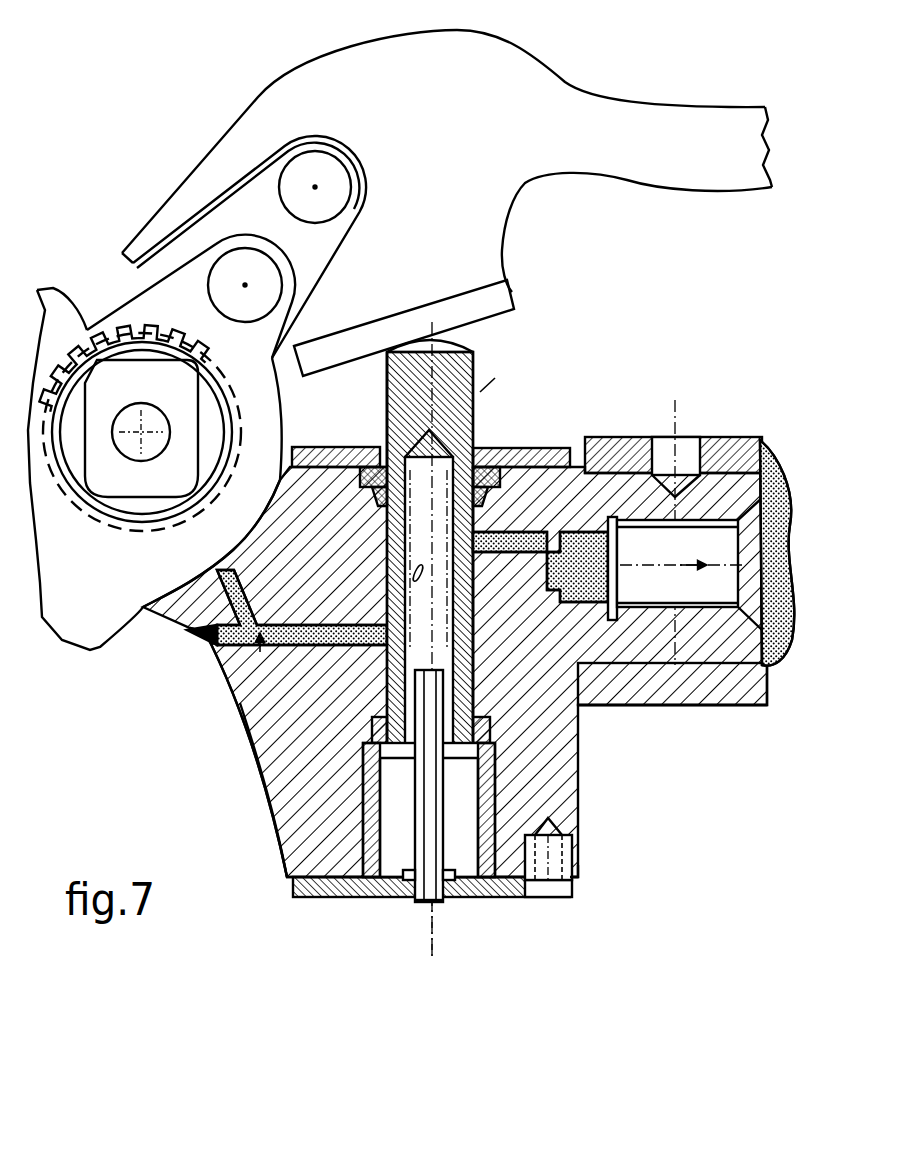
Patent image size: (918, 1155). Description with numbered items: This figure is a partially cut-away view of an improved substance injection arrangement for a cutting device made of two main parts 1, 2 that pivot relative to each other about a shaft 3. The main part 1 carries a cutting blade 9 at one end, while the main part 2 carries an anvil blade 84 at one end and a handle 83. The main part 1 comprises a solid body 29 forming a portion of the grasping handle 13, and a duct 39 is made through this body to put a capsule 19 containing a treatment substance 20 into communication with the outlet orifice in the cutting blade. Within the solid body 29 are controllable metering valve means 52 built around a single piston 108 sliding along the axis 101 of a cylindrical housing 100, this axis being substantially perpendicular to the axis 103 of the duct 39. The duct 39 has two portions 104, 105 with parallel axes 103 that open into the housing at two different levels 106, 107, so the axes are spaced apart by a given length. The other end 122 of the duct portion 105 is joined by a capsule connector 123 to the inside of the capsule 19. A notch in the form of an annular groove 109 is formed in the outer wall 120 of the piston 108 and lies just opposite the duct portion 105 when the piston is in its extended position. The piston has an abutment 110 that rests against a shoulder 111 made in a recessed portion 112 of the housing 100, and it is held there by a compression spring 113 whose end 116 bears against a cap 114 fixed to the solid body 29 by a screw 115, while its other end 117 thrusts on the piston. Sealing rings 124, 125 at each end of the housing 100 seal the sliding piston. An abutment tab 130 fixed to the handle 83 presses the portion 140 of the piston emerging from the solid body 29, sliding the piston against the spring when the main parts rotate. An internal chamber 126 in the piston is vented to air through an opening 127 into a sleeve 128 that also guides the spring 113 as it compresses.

The main part 1 is at (585, 869).
The main part 2 is at (462, 28).
The shaft 3 is at (146, 415).
The cutting blade 9 is at (55, 292).
The grasping handle 13 is at (710, 708).
The capsule 19 is at (768, 495).
The treatment substance 20 is at (740, 705).
The solid body 29 is at (258, 779).
The duct 39 is at (232, 679).
The controllable metering valve means 52 is at (505, 368).
The handle 83 is at (625, 110).
The anvil blade 84 is at (100, 650).
The cylindrical housing 100 is at (352, 472).
The axis 101 is at (431, 950).
The axis 103 is at (175, 630).
The duct portion 104 is at (265, 700).
The duct portion 105 is at (492, 540).
The level 106 is at (383, 632).
The level 107 is at (480, 540).
The piston 108 is at (470, 348).
The annular groove 109 is at (387, 536).
The abutment 110 is at (383, 762).
The shoulder 111 is at (470, 815).
The recessed portion 112 is at (383, 822).
The compression spring 113 is at (460, 880).
The cap 114 is at (312, 897).
The screw 115 is at (572, 836).
The end 116 is at (405, 880).
The end 117 is at (472, 455).
The outer wall 120 is at (390, 366).
The end 122 is at (585, 545).
The capsule connector 123 is at (630, 550).
The sealing ring 124 is at (585, 470).
The sealing ring 125 is at (490, 723).
The internal chamber 126 is at (438, 450).
The opening 127 is at (430, 903).
The sleeve 128 is at (437, 900).
The abutment tab 130 is at (490, 290).
The portion 140 is at (387, 408).